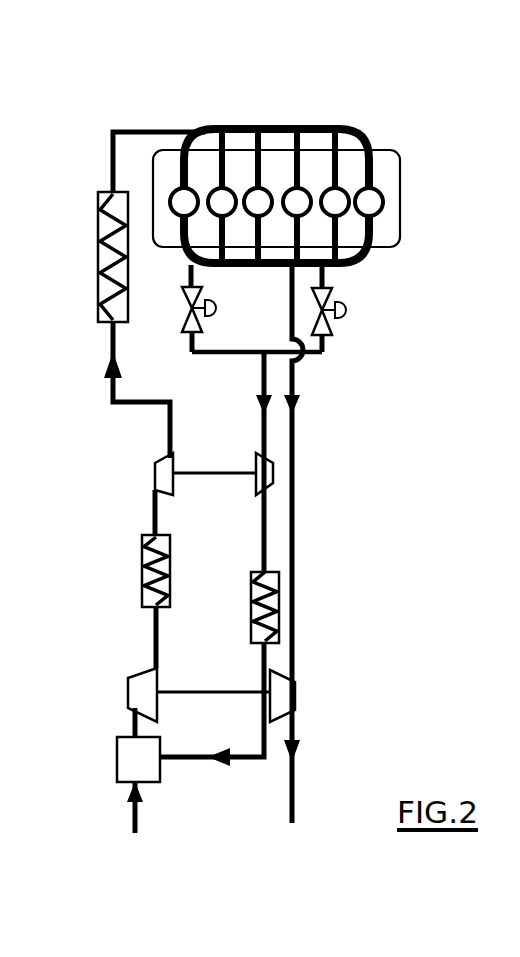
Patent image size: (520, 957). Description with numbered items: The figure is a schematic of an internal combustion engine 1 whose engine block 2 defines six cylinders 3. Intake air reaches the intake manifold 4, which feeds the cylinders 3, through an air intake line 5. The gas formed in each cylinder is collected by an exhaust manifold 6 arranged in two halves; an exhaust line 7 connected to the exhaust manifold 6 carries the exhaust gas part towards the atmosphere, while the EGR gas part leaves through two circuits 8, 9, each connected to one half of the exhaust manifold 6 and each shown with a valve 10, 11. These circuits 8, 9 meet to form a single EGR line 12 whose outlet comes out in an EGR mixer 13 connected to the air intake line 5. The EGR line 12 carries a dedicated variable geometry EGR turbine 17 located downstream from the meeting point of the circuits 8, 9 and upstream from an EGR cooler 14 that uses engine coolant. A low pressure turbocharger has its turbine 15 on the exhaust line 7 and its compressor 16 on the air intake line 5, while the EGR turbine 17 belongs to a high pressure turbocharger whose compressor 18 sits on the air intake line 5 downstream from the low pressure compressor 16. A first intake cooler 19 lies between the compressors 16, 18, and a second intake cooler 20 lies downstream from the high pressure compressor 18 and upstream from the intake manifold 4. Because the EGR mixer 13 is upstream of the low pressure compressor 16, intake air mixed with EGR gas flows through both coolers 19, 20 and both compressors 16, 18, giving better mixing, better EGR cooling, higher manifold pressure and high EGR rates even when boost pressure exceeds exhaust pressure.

The internal combustion engine 1 is at (395, 117).
The engine block 2 is at (402, 152).
The cylinders 3 is at (370, 202).
The intake manifold 4 is at (310, 124).
The air intake line 5 is at (130, 812).
The exhaust manifold 6 is at (363, 262).
The exhaust line 7 is at (293, 800).
The circuit 8 is at (187, 350).
The circuit 9 is at (327, 345).
The charge air valve 10 is at (187, 316).
The exhaust gas recirculation valve 11 is at (331, 304).
The EGR line 12 is at (252, 762).
The EGR mixer 13 is at (133, 752).
The EGR cooler 14 is at (272, 620).
The turbine 15 is at (285, 702).
The compressor 16 is at (135, 691).
The EGR turbine 17 is at (262, 477).
The compressor 18 is at (160, 478).
The first intake cooler 19 is at (142, 576).
The second intake cooler 20 is at (97, 268).